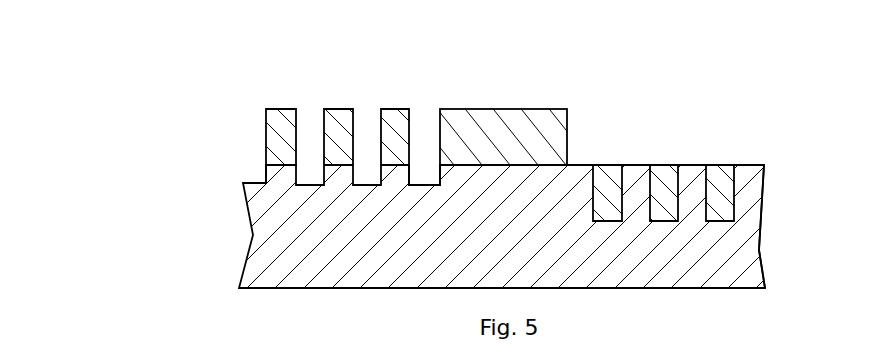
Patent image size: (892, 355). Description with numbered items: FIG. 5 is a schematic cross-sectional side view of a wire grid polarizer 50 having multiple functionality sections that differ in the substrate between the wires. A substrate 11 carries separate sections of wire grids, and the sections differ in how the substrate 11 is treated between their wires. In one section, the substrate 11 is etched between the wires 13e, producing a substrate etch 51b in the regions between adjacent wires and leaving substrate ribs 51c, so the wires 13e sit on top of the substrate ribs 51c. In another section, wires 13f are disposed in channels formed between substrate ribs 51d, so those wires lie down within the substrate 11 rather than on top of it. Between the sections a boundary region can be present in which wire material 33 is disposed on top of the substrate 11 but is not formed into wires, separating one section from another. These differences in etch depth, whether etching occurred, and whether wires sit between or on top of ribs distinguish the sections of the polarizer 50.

The wire grid polarizer 50 is at (460, 184).
The substrate 11 is at (265, 254).
The wires 13e is at (273, 138).
The wires 13f is at (663, 177).
The wire material 33 is at (522, 128).
The substrate etch 51b is at (422, 177).
The substrate ribs 51c is at (272, 176).
The substrate ribs 51d is at (750, 191).